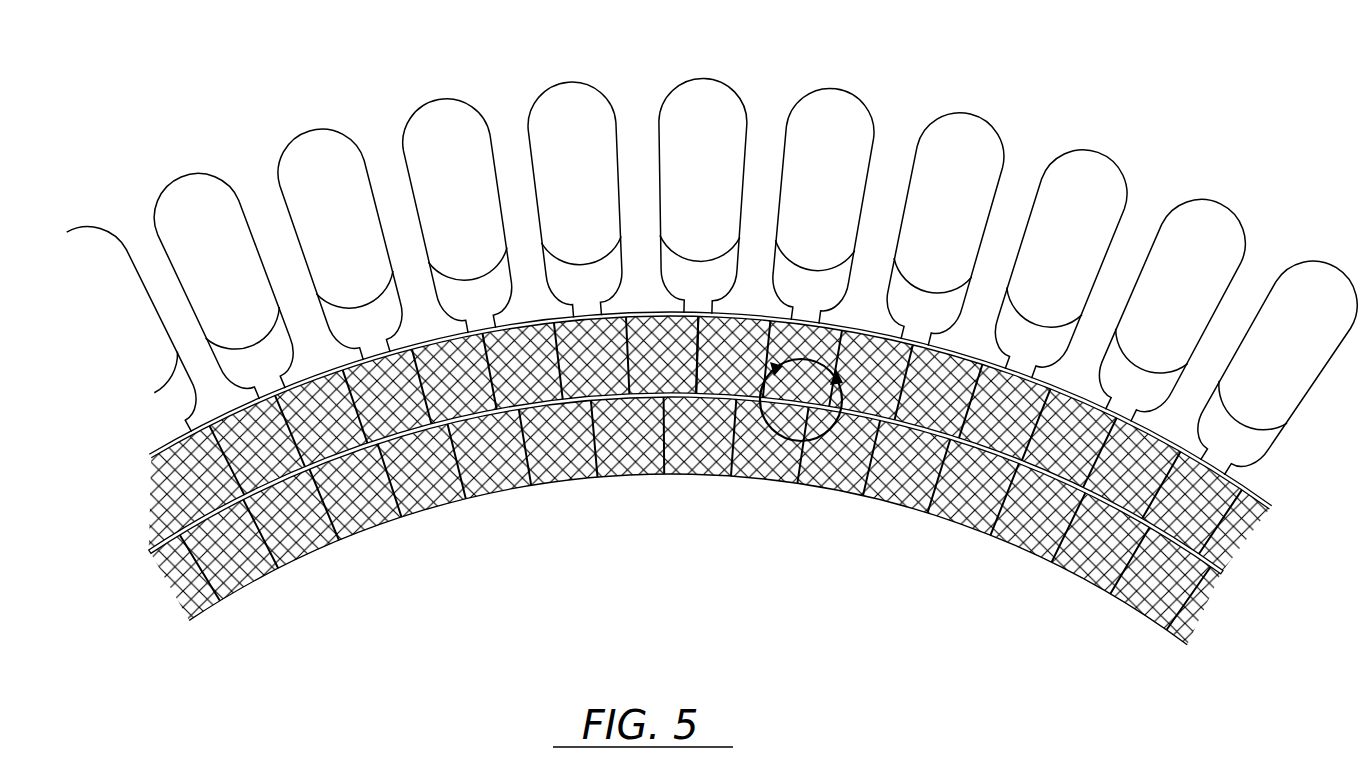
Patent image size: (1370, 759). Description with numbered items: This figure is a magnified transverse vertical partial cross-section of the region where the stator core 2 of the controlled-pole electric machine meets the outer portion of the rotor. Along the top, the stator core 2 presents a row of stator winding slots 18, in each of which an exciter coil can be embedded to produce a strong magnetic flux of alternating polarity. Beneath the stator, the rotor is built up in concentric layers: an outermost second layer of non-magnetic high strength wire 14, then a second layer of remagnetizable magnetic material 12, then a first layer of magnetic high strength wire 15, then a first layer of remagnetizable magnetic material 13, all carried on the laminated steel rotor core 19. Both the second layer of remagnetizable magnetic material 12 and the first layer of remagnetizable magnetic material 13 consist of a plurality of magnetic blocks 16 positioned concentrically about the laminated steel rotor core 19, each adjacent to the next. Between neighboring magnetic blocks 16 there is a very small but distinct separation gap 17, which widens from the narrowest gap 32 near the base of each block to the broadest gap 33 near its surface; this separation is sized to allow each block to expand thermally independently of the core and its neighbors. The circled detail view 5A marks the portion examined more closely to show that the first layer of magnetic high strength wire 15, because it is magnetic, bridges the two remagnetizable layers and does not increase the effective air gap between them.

The stator core 2 is at (685, 379).
The detail view 5A is at (838, 372).
The second layer of remagnetizable magnetic material 12 is at (1248, 552).
The first layer of remagnetizable magnetic material 13 is at (1201, 614).
The second layer of non-magnetic high strength wire 14 is at (1274, 504).
The first layer of magnetic high strength wire 15 is at (1228, 577).
The magnetic block 16 is at (557, 540).
The separation gap 17 is at (377, 578).
The stator winding slot 18 is at (797, 130).
The laminated steel rotor core 19 is at (1058, 578).
The narrowest gap 32 is at (716, 387).
The broadest gap 33 is at (704, 386).